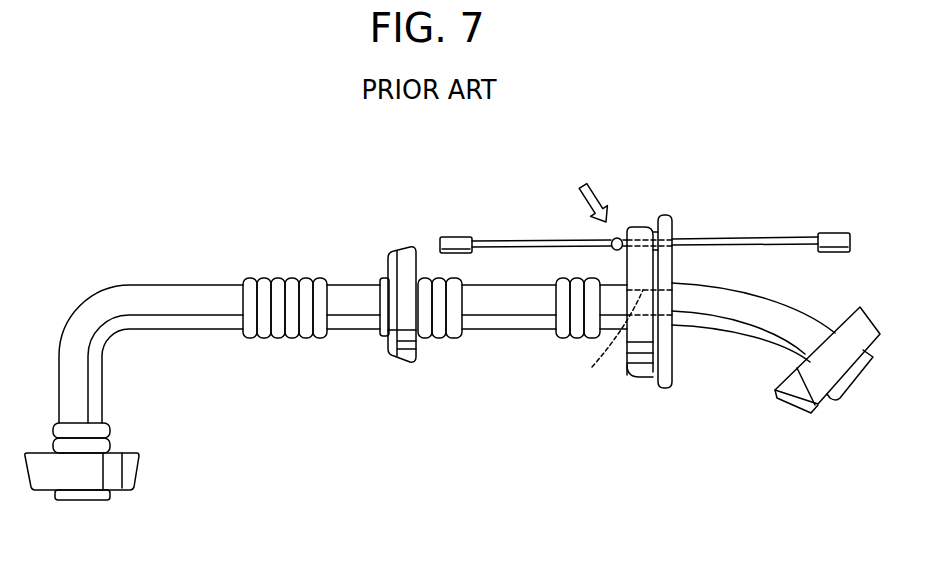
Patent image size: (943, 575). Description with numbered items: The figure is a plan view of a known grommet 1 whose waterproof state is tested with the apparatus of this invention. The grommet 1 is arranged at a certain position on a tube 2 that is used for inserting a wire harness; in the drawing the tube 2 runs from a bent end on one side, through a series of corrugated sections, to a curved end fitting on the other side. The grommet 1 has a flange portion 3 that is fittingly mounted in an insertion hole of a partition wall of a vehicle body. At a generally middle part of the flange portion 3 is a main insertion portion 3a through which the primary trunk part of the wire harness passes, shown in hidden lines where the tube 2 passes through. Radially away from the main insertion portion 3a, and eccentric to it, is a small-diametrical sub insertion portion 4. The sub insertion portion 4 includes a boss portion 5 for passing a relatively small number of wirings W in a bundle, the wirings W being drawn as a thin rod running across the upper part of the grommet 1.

The grommet 1 is at (619, 317).
The tube 2 is at (730, 320).
The flange portion 3 is at (632, 362).
The main insertion portion 3a is at (619, 316).
The sub insertion portion 4 is at (619, 229).
The boss portion 5 is at (607, 238).
The wirings W is at (802, 234).